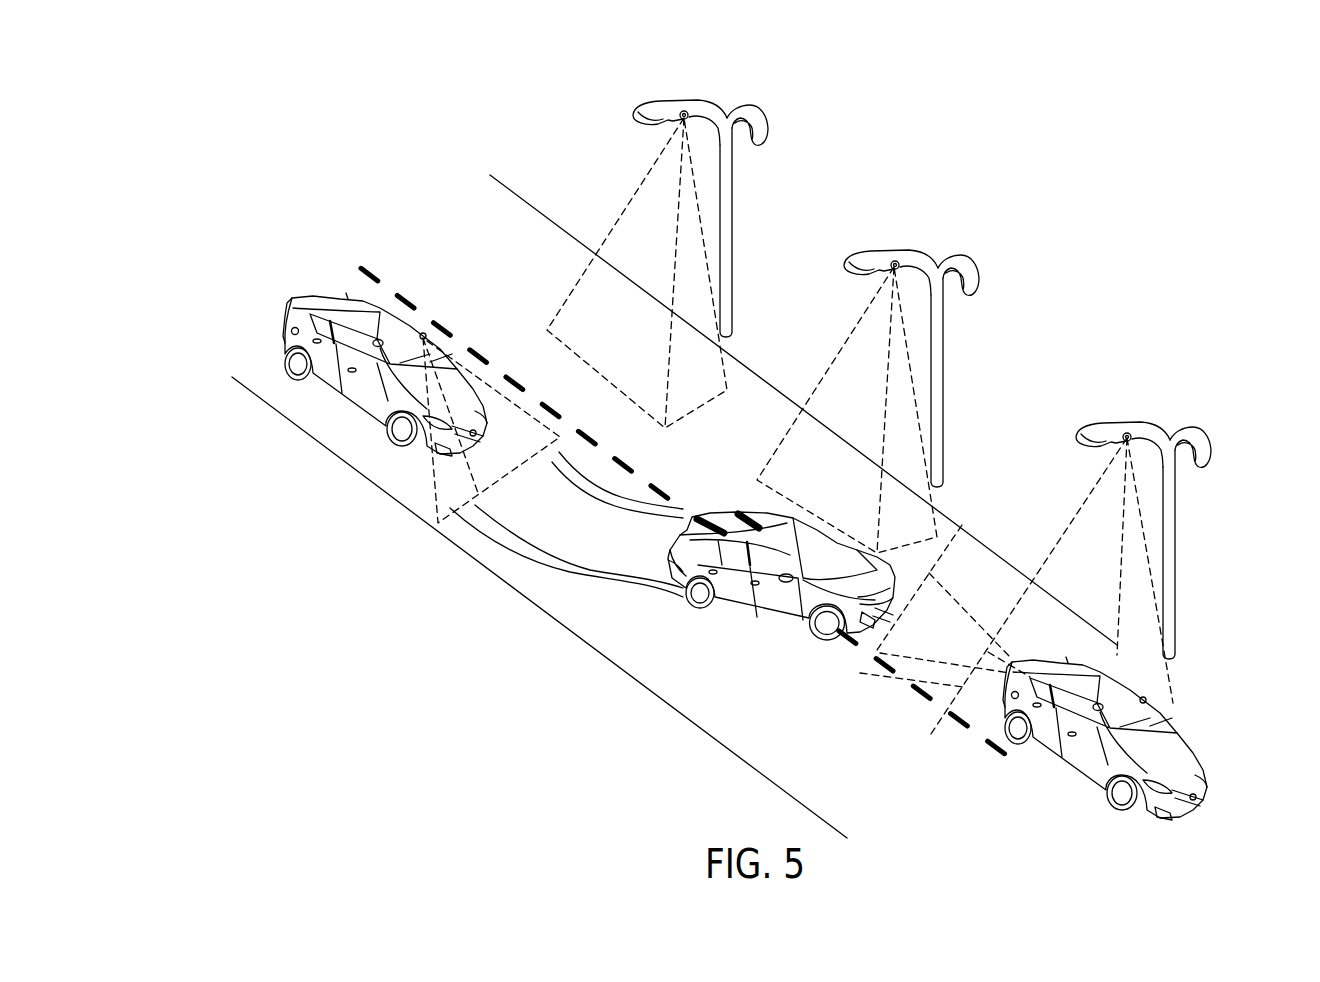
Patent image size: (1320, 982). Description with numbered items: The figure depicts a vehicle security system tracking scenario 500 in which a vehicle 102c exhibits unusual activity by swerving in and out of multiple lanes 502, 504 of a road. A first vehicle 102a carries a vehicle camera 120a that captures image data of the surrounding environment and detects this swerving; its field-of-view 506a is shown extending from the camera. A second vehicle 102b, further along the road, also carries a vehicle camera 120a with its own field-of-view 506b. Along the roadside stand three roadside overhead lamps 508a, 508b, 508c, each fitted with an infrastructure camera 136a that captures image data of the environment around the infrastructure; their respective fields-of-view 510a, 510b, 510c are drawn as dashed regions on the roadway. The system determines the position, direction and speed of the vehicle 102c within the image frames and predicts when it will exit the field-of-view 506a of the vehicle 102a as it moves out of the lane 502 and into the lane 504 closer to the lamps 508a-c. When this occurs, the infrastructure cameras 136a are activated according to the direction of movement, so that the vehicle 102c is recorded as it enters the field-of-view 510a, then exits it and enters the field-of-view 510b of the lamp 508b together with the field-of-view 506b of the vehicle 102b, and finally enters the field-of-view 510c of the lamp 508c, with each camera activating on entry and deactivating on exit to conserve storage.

The traffic scenario 500 is at (302, 155).
The lane 502 is at (723, 723).
The lane 504 is at (958, 562).
The field-of-view 506a is at (480, 385).
The field-of-view 506b is at (935, 725).
The roadside overhead lamp 508a is at (762, 114).
The roadside overhead lamp 508b is at (972, 272).
The roadside overhead lamp 508c is at (1197, 432).
The field-of-view 510a is at (648, 194).
The field-of-view 510b is at (858, 345).
The field-of-view 510c is at (1085, 522).
The infrastructure camera 136a is at (683, 112).
The vehicle camera 120a is at (423, 338).
The vehicle 102a is at (318, 296).
The vehicle 102b is at (1041, 757).
The vehicle 102c is at (773, 600).